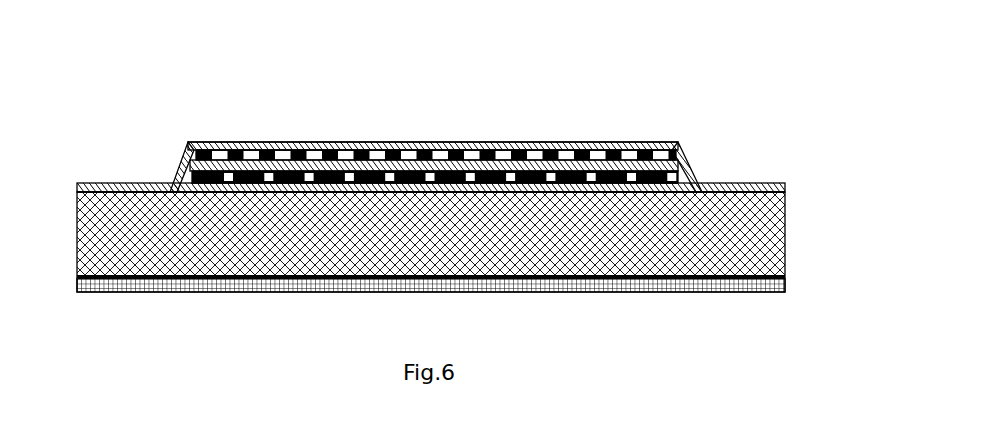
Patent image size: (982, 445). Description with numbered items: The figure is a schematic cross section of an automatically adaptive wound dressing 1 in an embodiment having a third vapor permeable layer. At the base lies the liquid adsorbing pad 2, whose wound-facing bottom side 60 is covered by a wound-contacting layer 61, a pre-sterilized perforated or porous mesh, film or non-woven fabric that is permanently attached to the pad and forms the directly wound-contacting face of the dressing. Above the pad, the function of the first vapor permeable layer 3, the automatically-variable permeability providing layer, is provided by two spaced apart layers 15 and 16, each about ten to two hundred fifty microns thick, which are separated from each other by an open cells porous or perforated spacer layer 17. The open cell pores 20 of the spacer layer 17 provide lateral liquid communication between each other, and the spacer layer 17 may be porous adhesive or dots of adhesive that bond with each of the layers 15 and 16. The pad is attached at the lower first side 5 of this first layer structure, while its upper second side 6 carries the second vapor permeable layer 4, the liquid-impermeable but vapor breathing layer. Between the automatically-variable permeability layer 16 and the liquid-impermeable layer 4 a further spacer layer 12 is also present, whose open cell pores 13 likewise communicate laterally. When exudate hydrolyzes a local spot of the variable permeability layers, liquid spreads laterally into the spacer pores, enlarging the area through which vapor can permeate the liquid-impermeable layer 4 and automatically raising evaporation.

The automatically adaptive wound dressing 1 is at (697, 111).
The liquid adsorbing pad 2 is at (785, 262).
The first vapor permeable layer 3 is at (686, 167).
The second vapor permeable layer 4 is at (783, 186).
The lower first side 5 is at (785, 212).
The upper second side 6 is at (660, 142).
The spacer layer 12 is at (207, 142).
The open cell pores 13 is at (255, 142).
The spaced apart layer 15 is at (686, 174).
The automatically-variable permeability layer 16 is at (172, 168).
The spacer layer 17 is at (165, 183).
The open cell pores 20 is at (318, 142).
The wound-facing bottom side 60 is at (77, 277).
The wound-contacting layer 61 is at (86, 292).